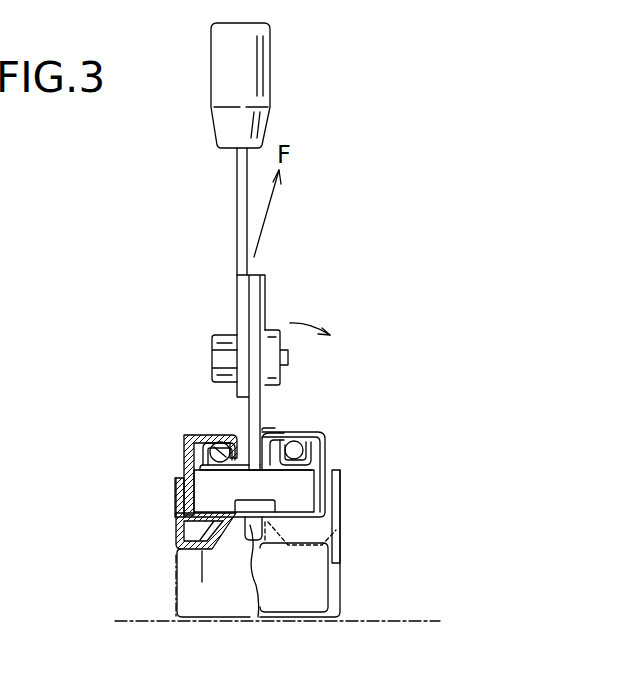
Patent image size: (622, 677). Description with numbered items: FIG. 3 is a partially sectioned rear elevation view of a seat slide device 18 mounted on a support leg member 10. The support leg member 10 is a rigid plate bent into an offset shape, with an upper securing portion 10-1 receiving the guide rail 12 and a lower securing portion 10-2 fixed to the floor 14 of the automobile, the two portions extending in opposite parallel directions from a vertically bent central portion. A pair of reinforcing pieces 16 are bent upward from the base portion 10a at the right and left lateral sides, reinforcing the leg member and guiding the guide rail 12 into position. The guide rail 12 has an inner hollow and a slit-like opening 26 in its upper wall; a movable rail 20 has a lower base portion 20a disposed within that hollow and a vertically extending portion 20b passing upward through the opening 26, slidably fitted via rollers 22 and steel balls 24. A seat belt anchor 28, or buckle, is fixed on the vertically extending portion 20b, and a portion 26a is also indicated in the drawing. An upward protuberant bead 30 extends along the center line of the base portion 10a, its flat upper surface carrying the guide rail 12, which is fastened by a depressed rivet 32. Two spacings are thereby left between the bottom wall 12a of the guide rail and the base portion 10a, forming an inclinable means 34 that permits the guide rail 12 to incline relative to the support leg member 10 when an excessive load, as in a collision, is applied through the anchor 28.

The support leg member 10 is at (370, 560).
The upper securing portion 10-1 is at (172, 505).
The lower securing portion 10-2 is at (340, 590).
The base portion 10a is at (207, 584).
The guide rail 12 is at (333, 440).
The bottom wall 12a is at (307, 520).
The floor 14 is at (407, 618).
The reinforcing pieces 16 is at (175, 478).
The seat slide device 18 is at (307, 425).
The movable rail 20 is at (247, 413).
The lower base portion 20a is at (318, 452).
The vertically extending portion 20b is at (265, 287).
The rollers 22 is at (177, 513).
The steel balls 24 is at (182, 448).
The opening 26 is at (273, 440).
The hook portion 26a is at (243, 440).
The seat belt anchor 28 is at (270, 70).
The upward protuberant bead 30 is at (232, 533).
The rivet 32 is at (257, 560).
The inclinable means 34 is at (177, 543).